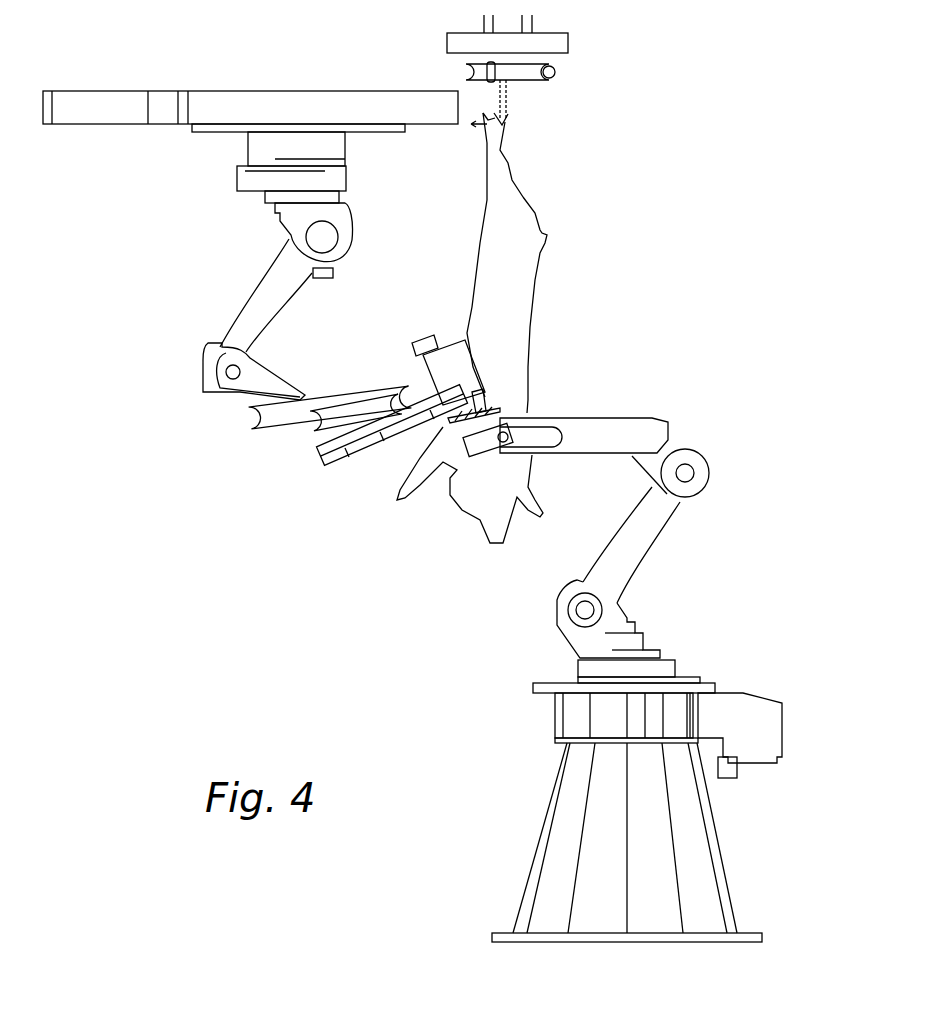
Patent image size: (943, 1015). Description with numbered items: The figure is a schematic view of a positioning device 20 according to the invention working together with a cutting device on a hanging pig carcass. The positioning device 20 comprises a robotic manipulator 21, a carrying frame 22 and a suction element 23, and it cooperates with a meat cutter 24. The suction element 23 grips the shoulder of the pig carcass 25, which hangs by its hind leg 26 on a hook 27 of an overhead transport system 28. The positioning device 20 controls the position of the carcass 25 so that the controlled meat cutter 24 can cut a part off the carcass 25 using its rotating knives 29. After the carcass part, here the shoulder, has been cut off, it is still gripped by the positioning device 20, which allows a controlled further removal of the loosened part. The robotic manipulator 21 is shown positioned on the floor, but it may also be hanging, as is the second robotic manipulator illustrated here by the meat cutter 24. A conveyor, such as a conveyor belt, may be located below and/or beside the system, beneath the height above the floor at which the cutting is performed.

The positioning device 20 is at (725, 653).
The robotic manipulator 21 is at (645, 538).
The carrying frame 22 is at (527, 420).
The suction element 23 is at (467, 467).
The meat cutter 24 is at (218, 446).
The pig carcass 25 is at (497, 286).
The hind leg 26 is at (493, 153).
The hook 27 is at (503, 97).
The overhead transport system 28 is at (557, 72).
The rotating knives 29 is at (527, 413).